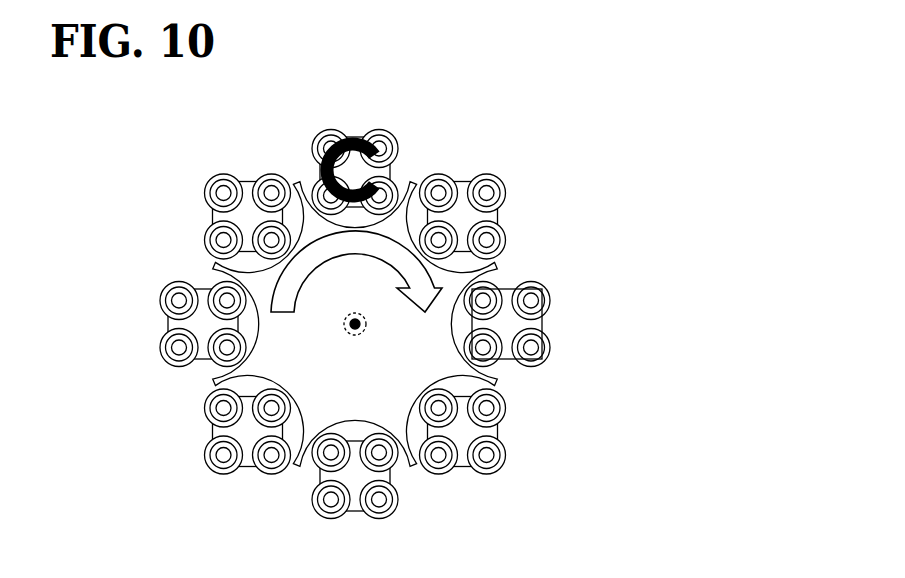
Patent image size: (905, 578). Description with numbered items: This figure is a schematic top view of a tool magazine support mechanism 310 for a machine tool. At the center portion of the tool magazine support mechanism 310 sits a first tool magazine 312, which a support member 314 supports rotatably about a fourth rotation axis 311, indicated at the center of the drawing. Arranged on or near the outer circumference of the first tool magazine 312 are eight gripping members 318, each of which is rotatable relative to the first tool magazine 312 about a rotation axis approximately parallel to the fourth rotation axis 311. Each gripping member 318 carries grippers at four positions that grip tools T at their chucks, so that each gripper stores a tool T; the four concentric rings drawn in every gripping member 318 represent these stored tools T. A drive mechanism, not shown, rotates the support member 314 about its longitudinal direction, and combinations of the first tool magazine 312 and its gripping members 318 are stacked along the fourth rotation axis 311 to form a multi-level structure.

The tool magazine support mechanism 310 is at (381, 310).
The fourth rotation axis 311 is at (348, 327).
The first tool magazine 312 is at (252, 277).
The support member 314 is at (367, 323).
The gripping member 318 is at (510, 320).
The tool T is at (481, 176).